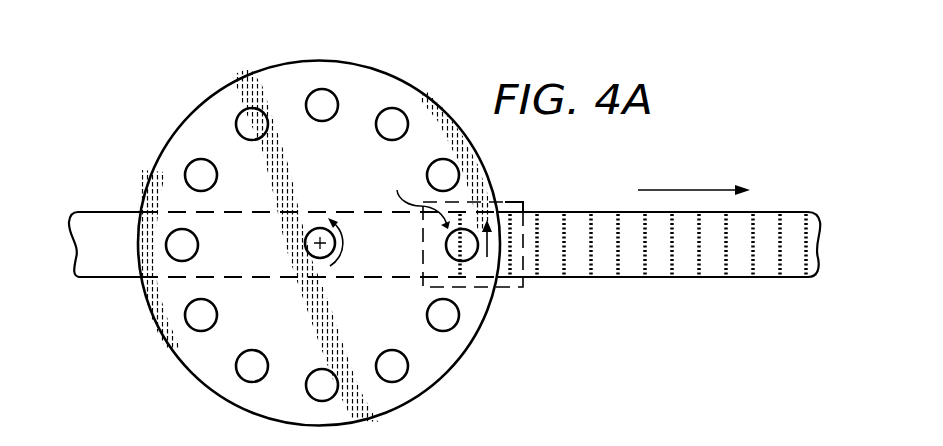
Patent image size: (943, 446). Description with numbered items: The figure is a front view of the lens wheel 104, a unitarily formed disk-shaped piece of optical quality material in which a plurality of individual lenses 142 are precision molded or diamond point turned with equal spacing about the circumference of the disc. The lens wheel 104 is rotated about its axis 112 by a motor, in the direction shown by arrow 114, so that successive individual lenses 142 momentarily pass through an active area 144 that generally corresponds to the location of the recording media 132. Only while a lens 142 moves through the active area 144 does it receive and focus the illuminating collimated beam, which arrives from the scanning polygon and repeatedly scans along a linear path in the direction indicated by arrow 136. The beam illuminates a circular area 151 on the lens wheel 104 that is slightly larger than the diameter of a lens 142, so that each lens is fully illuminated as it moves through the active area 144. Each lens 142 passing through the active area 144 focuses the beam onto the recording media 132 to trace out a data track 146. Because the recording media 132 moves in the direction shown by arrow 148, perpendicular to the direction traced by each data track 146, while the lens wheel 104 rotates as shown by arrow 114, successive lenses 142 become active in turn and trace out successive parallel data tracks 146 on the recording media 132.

The lens wheel 104 is at (312, 58).
The axis 112 is at (321, 228).
The arrow 114 is at (336, 268).
The recording media 132 is at (577, 211).
The arrow 136 is at (487, 252).
The individual lenses 142 is at (384, 120).
The active area 144 is at (513, 198).
The data track 146 is at (419, 233).
The arrow 148 is at (690, 188).
The circular area 151 is at (413, 196).